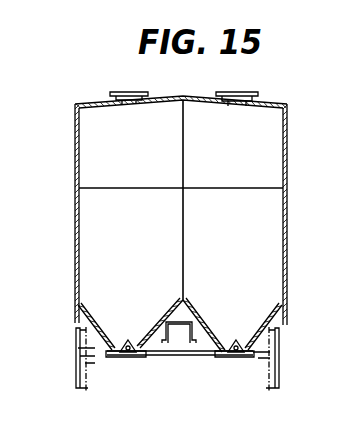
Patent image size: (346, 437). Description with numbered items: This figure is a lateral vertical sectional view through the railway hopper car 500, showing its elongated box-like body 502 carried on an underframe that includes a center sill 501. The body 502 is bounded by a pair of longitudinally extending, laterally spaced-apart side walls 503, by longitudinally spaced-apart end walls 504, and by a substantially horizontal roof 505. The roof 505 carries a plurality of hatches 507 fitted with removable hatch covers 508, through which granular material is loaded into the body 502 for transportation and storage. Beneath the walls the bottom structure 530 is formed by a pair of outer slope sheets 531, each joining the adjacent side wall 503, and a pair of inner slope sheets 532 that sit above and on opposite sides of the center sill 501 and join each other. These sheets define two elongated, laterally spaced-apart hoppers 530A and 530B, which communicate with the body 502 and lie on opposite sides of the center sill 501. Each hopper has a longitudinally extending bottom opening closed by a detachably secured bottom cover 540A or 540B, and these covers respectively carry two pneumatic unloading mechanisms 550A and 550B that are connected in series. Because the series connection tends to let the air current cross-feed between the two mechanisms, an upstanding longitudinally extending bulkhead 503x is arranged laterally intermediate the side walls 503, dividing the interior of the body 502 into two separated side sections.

The railway hopper car 500 is at (62, 120).
The center sill 501 is at (190, 356).
The box-like body 502 is at (73, 216).
The side wall 503 is at (80, 236).
The bulkhead 503x is at (184, 170).
The end wall 504 is at (288, 143).
The roof 505 is at (183, 97).
The hatch 507 is at (133, 100).
The hatch cover 508 is at (118, 92).
The bottom structure 530 is at (190, 299).
The hopper 530A is at (122, 332).
The hopper 530B is at (238, 333).
The outer slope sheet 531 is at (103, 320).
The inner slope sheet 532 is at (165, 323).
The bottom cover 540A is at (112, 358).
The bottom cover 540B is at (236, 358).
The pneumatic unloading mechanism 550A is at (113, 350).
The pneumatic unloading mechanism 550B is at (250, 348).